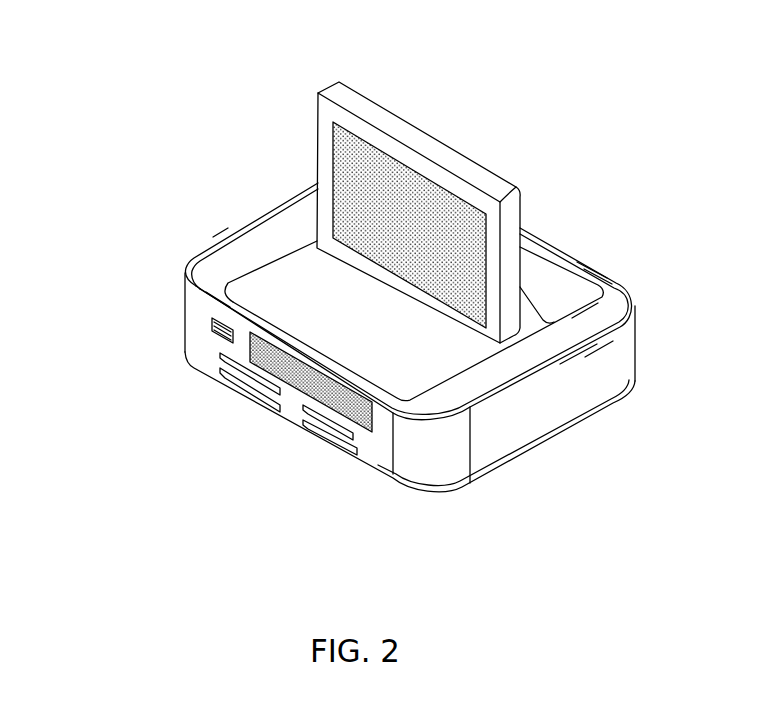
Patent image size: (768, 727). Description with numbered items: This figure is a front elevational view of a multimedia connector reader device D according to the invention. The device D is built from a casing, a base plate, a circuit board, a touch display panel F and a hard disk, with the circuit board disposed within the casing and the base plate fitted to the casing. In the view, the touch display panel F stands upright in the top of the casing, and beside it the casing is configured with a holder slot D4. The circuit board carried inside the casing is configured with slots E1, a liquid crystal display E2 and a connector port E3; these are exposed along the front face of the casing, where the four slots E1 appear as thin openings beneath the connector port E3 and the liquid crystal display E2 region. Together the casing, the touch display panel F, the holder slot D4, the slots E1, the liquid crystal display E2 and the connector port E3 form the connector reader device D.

The multimedia connector reader device D is at (245, 182).
The touch display panel F is at (432, 150).
The holder slot D4 is at (553, 290).
The slots E1 is at (250, 371).
The liquid crystal display E2 is at (375, 415).
The connector port E3 is at (212, 331).